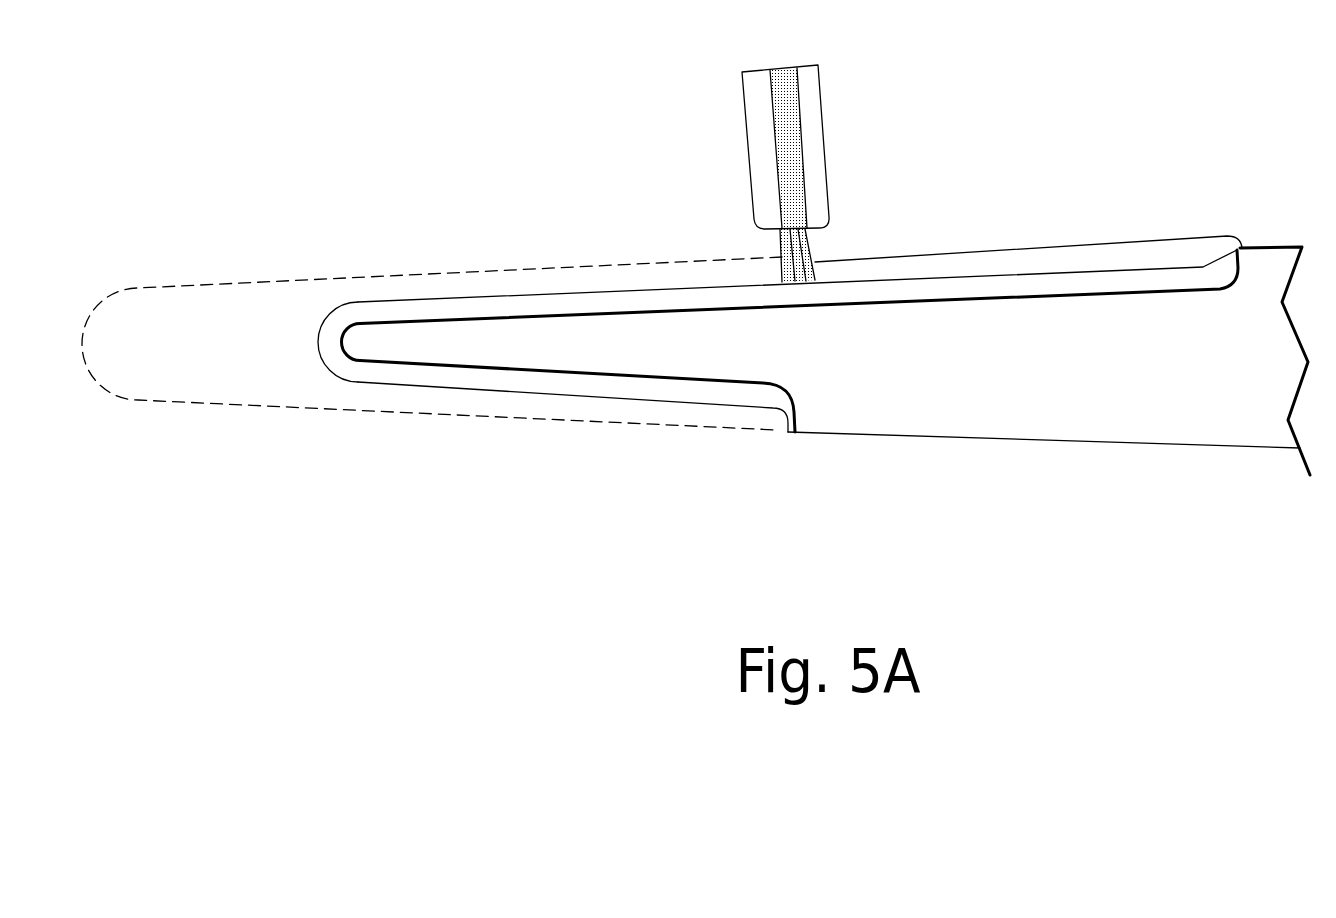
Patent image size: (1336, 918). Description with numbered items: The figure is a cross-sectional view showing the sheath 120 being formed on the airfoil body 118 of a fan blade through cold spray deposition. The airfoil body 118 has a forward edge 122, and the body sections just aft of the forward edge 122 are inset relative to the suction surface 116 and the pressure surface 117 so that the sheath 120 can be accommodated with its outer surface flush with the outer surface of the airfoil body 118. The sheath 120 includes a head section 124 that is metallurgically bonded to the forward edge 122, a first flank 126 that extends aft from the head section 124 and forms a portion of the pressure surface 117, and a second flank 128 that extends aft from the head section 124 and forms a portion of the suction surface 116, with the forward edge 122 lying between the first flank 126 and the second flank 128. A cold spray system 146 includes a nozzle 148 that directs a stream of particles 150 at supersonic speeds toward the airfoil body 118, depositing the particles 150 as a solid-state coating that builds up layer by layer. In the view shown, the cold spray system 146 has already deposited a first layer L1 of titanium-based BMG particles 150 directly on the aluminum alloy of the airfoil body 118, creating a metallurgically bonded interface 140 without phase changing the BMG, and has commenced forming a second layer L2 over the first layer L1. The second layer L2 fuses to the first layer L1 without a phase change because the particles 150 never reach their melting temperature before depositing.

The suction surface 116 is at (1272, 240).
The pressure surface 117 is at (1153, 452).
The airfoil body 118 is at (1248, 428).
The sheath 120 is at (853, 268).
The forward edge 122 is at (358, 340).
The head section 124 is at (327, 337).
The first flank 126 is at (657, 390).
The second flank 128 is at (1005, 262).
The interface 140 is at (604, 303).
The cold spray system 146 is at (558, 91).
The nozzle 148 is at (810, 97).
The particles 150 is at (788, 143).
The first layer L1 is at (1040, 287).
The second layer L2 is at (933, 260).